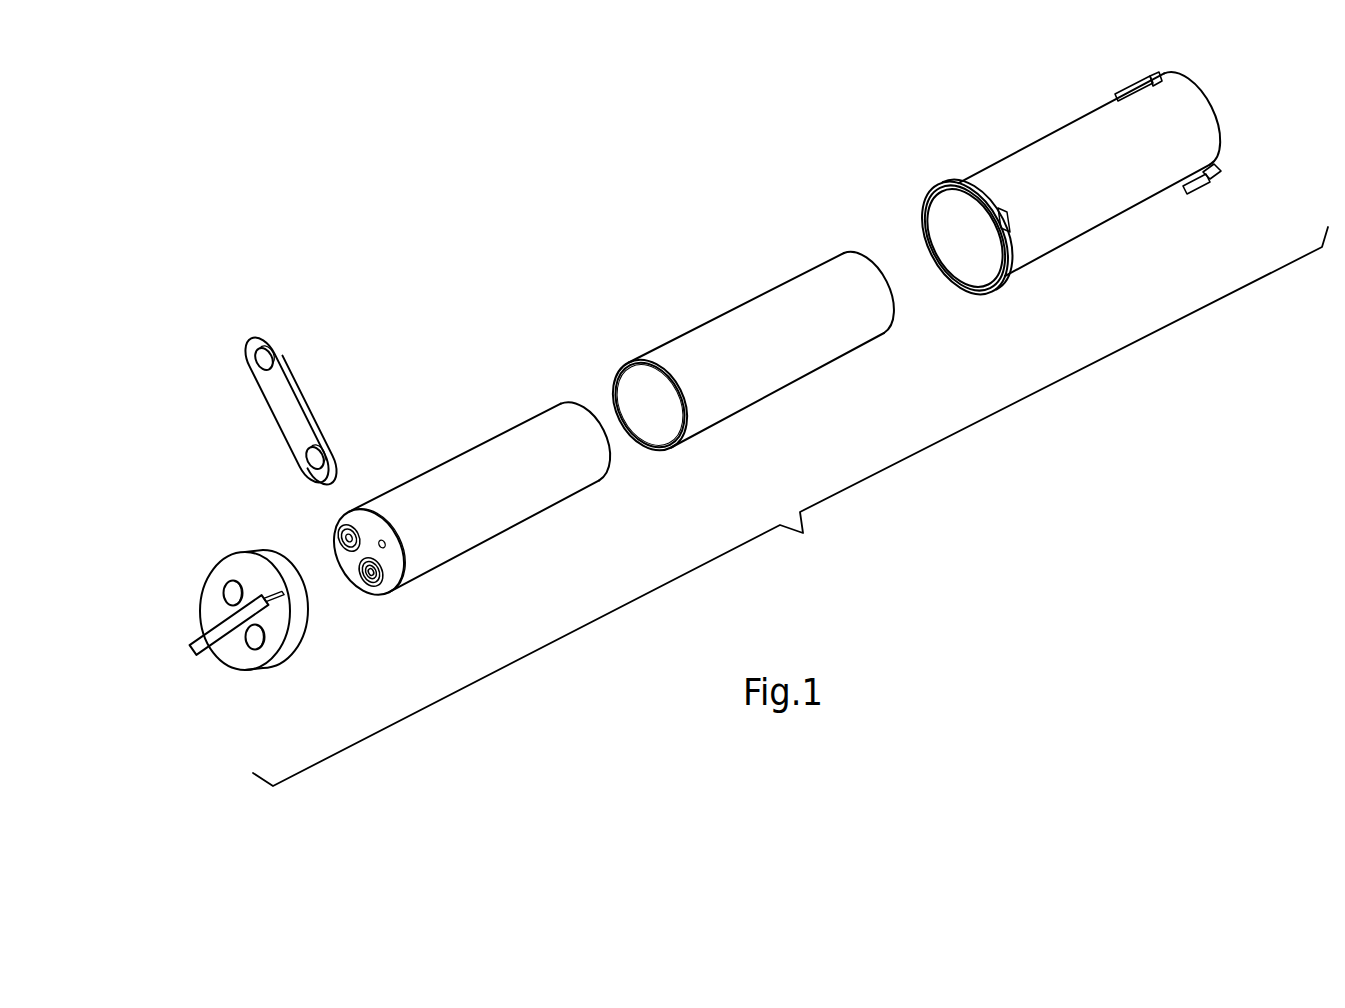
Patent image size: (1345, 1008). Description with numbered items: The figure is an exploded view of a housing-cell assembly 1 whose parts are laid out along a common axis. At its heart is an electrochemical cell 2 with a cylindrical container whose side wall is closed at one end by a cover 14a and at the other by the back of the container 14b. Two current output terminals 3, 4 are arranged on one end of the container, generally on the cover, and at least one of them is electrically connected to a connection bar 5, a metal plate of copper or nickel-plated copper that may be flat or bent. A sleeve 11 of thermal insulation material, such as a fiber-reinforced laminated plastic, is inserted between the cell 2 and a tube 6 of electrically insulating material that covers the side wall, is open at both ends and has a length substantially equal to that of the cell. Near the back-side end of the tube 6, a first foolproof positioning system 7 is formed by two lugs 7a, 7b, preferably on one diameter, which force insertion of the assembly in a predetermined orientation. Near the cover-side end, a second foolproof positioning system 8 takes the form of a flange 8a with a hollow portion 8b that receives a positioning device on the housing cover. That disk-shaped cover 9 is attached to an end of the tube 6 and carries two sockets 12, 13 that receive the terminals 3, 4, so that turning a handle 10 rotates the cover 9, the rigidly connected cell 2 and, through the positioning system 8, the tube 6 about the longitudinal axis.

The housing-cell assembly 1 is at (790, 506).
The electrochemical cell 2 is at (439, 481).
The current output terminal 3 is at (337, 539).
The current output terminal 4 is at (361, 578).
The connection bar 5 is at (301, 367).
The tube 6 is at (1112, 187).
The first foolproof positioning system 7 is at (1220, 115).
The lug 7a is at (1136, 73).
The lug 7b is at (1237, 149).
The second foolproof positioning system 8 is at (971, 170).
The flange 8a is at (933, 189).
The hollow portion 8b is at (1019, 154).
The cover of the housing 9 is at (207, 611).
The handle 10 is at (188, 651).
The sleeve 11 is at (795, 390).
The socket 12 is at (224, 594).
The socket 13 is at (249, 641).
The cover 14a is at (339, 533).
The back of the container 14b is at (590, 403).